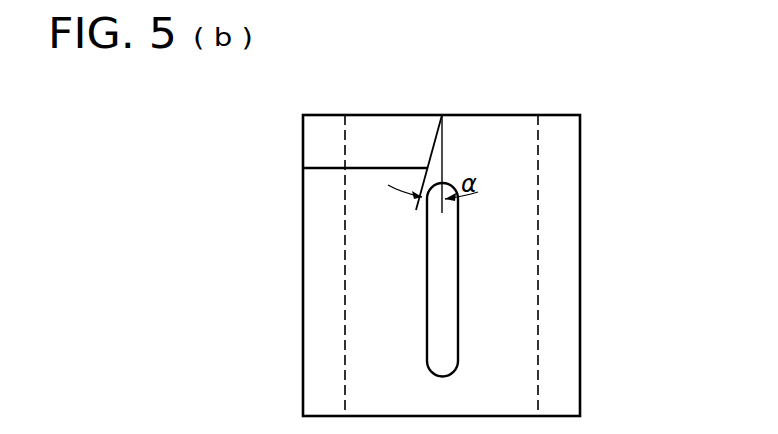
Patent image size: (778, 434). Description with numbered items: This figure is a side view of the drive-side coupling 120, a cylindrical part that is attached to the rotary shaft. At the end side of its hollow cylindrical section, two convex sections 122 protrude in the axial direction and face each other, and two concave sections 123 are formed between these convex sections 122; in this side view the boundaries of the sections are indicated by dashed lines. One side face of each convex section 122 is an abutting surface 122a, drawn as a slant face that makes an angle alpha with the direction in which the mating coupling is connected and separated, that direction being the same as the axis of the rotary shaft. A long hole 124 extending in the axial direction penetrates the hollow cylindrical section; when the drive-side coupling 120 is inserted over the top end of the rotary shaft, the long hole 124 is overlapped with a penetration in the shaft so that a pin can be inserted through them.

The drive-side coupling 120 is at (581, 238).
The convex section 122 is at (318, 145).
The abutting surface 122a is at (430, 130).
The concave section 123 is at (377, 127).
The long hole 124 is at (450, 324).